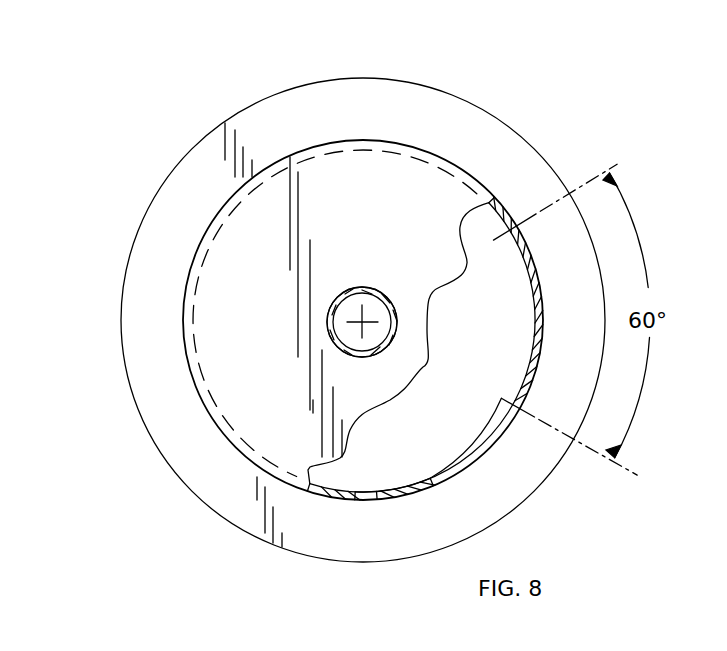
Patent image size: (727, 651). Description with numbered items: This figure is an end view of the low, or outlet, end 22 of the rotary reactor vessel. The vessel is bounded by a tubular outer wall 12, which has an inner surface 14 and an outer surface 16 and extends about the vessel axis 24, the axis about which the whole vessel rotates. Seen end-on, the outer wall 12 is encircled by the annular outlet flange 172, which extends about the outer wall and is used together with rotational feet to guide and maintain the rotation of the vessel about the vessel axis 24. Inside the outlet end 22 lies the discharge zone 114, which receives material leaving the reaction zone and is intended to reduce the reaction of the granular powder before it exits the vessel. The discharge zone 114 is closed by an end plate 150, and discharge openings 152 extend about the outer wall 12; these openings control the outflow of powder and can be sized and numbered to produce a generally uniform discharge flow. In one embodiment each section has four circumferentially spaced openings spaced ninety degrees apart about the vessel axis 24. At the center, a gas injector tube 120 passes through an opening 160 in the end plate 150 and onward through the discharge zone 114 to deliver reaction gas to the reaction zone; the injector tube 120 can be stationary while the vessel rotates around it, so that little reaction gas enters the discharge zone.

The outer wall 12 is at (418, 488).
The inner surface 14 is at (450, 470).
The outer surface 16 is at (460, 477).
The outlet end 22 is at (203, 348).
The vessel axis 24 is at (365, 312).
The discharge zone 114 is at (495, 368).
The gas injector tube 120 is at (357, 286).
The end plate 150 is at (407, 185).
The discharge openings 152 is at (352, 142).
The opening 160 is at (328, 322).
The annular outlet flange 172 is at (135, 322).